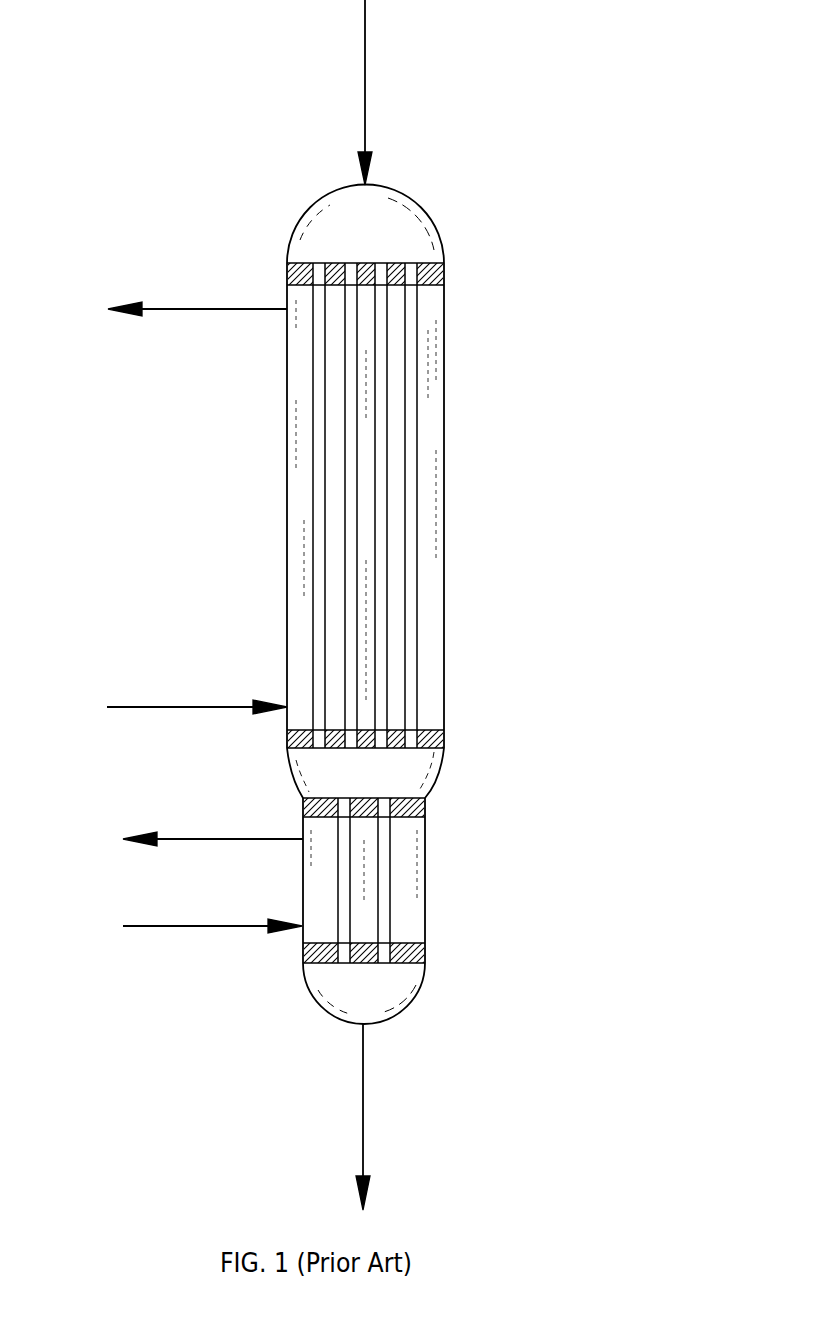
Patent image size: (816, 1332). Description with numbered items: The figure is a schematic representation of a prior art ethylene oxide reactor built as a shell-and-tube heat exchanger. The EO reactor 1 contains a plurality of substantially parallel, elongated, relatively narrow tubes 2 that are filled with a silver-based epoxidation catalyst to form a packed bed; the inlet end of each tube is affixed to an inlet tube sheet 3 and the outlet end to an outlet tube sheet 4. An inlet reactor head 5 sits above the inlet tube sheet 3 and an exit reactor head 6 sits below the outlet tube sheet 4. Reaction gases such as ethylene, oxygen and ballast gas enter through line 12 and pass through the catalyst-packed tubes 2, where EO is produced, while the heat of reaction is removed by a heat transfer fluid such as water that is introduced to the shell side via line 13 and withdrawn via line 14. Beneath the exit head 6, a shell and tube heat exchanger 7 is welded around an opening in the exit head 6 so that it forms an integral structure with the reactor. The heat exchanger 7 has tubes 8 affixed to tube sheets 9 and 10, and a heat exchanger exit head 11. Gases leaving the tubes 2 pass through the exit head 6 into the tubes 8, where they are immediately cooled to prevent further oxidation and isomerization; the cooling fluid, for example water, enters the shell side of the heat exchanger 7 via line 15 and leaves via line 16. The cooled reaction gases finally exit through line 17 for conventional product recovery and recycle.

The EO reactor 1 is at (445, 335).
The elongated tubes 2 is at (420, 484).
The inlet tube sheet 3 is at (438, 277).
The outlet tube sheet 4 is at (437, 740).
The inlet reactor head 5 is at (400, 195).
The exit reactor head 6 is at (440, 772).
The shell and tube heat exchanger 7 is at (425, 925).
The tubes 8 is at (385, 880).
The tube sheet 9 is at (425, 813).
The tube sheet 10 is at (302, 950).
The heat exchanger exit head 11 is at (412, 1003).
The line 12 is at (365, 77).
The line 13 is at (198, 706).
The line 14 is at (198, 307).
The line 15 is at (192, 926).
The line 16 is at (192, 838).
The line 17 is at (363, 1082).